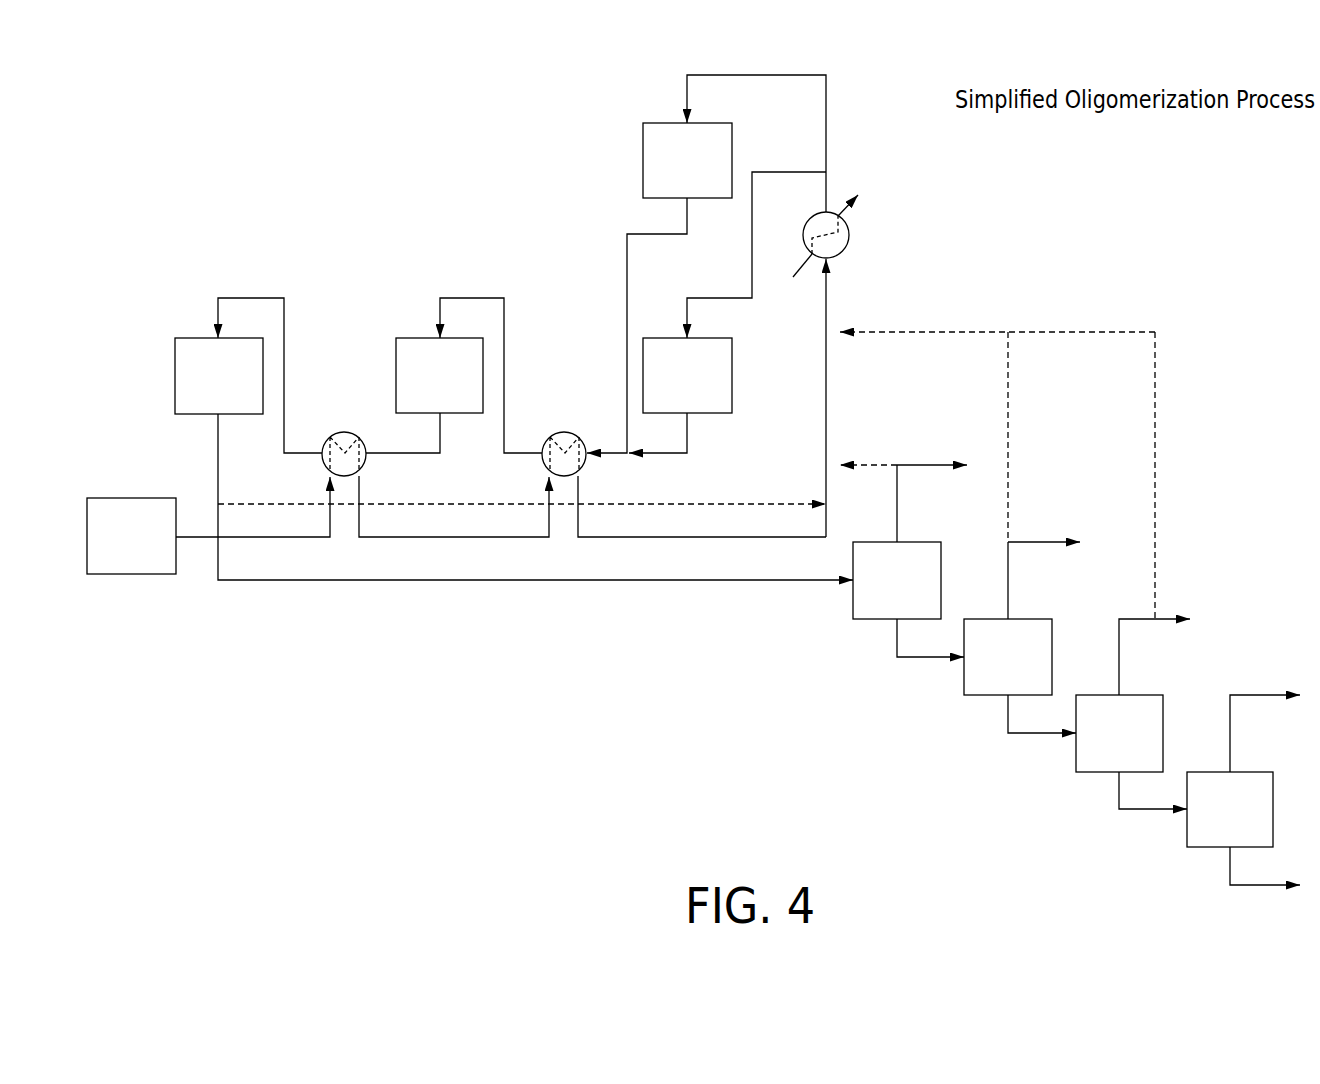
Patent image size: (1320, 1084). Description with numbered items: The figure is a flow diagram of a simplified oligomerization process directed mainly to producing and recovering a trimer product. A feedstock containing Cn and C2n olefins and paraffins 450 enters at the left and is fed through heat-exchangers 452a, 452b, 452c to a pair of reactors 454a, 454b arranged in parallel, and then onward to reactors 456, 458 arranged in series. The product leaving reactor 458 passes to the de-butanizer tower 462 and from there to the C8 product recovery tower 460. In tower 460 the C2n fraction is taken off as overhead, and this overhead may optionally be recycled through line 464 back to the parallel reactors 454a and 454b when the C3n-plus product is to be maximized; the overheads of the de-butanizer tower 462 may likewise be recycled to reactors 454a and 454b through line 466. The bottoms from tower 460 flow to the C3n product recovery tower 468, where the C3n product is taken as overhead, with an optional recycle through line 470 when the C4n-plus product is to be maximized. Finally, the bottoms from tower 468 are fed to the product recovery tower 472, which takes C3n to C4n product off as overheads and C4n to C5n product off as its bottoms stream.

The feedstock containing Cn and C2n olefins/paraffins 450 is at (112, 547).
The heat-exchanger 452a is at (343, 432).
The heat-exchanger 452b is at (563, 432).
The heat-exchanger 452c is at (850, 236).
The reactor 454a is at (663, 171).
The reactor 454b is at (663, 387).
The reactor 456 is at (421, 387).
The reactor 458 is at (200, 387).
The C8 product recovery tower 460 is at (989, 668).
The de-butanizer tower 462 is at (878, 591).
The line 464 is at (1010, 402).
The line 466 is at (868, 462).
The C3n product recovery tower 468 is at (1100, 744).
The line 470 is at (1156, 455).
The product recovery tower 472 is at (1211, 821).